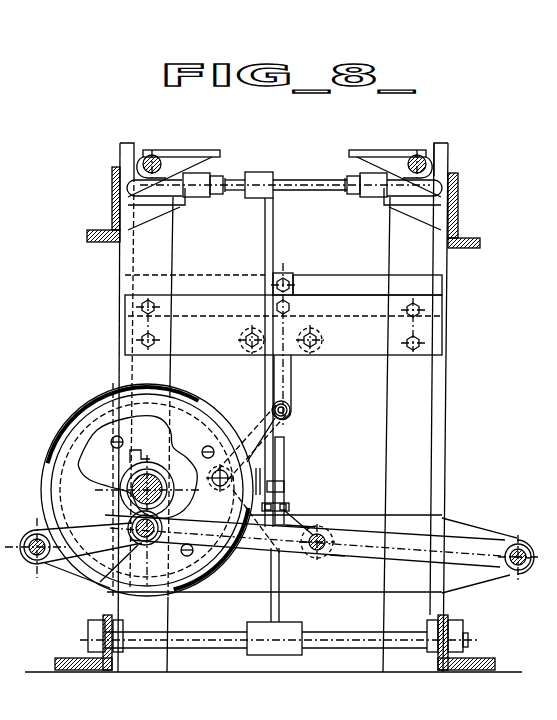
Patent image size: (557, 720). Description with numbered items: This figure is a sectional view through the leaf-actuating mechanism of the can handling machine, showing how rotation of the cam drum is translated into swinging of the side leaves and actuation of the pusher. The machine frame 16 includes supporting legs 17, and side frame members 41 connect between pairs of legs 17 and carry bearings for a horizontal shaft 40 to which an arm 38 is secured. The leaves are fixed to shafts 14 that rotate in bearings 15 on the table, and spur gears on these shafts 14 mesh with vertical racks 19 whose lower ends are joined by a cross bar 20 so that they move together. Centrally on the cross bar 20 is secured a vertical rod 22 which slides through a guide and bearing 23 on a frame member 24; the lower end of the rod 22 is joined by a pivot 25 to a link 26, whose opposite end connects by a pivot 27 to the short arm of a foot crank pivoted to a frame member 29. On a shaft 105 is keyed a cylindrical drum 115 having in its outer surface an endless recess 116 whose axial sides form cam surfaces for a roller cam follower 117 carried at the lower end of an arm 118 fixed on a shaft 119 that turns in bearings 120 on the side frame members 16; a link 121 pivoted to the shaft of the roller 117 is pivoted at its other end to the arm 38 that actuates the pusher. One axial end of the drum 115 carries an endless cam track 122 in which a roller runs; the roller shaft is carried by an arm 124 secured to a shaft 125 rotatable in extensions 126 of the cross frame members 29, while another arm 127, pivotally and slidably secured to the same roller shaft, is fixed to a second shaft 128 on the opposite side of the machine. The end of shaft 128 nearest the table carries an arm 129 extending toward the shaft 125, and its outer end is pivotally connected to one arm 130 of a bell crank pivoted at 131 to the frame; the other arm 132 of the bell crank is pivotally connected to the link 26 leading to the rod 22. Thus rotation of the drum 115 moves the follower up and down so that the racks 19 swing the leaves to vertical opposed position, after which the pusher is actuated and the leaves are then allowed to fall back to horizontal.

The shaft 14 is at (154, 157).
The bearing 15 is at (203, 152).
The frame 16 is at (112, 180).
The supporting leg 17 is at (120, 263).
The vertical rack 19 is at (120, 153).
The cross bar 20 is at (358, 283).
The vertical rod 22 is at (290, 375).
The guide and bearing 23 is at (327, 342).
The frame member 24 is at (193, 342).
The pivot 25 is at (290, 409).
The link 26 is at (253, 427).
The pivot 27 is at (213, 478).
The frame member 29 is at (364, 582).
The arm 38 is at (284, 443).
The horizontal shaft 40 is at (224, 618).
The side frame member 41 is at (72, 657).
The shaft 105 is at (130, 487).
The cylindrical drum 115 is at (100, 392).
The endless recess 116 is at (65, 427).
The cam follower 117 is at (259, 477).
The arm 118 is at (266, 243).
The shaft 119 is at (288, 178).
The bearing 120 is at (197, 192).
The link 121 is at (284, 484).
The endless cam track 122 is at (82, 420).
The arm 124 is at (50, 562).
The shaft 125 is at (33, 535).
The extension 126 is at (60, 578).
The arm 127 is at (100, 582).
The second shaft 128 is at (516, 540).
The arm 129 is at (358, 536).
The bell crank arm 130 is at (298, 528).
The pivot 131 is at (319, 551).
The bell crank arm 132 is at (253, 543).